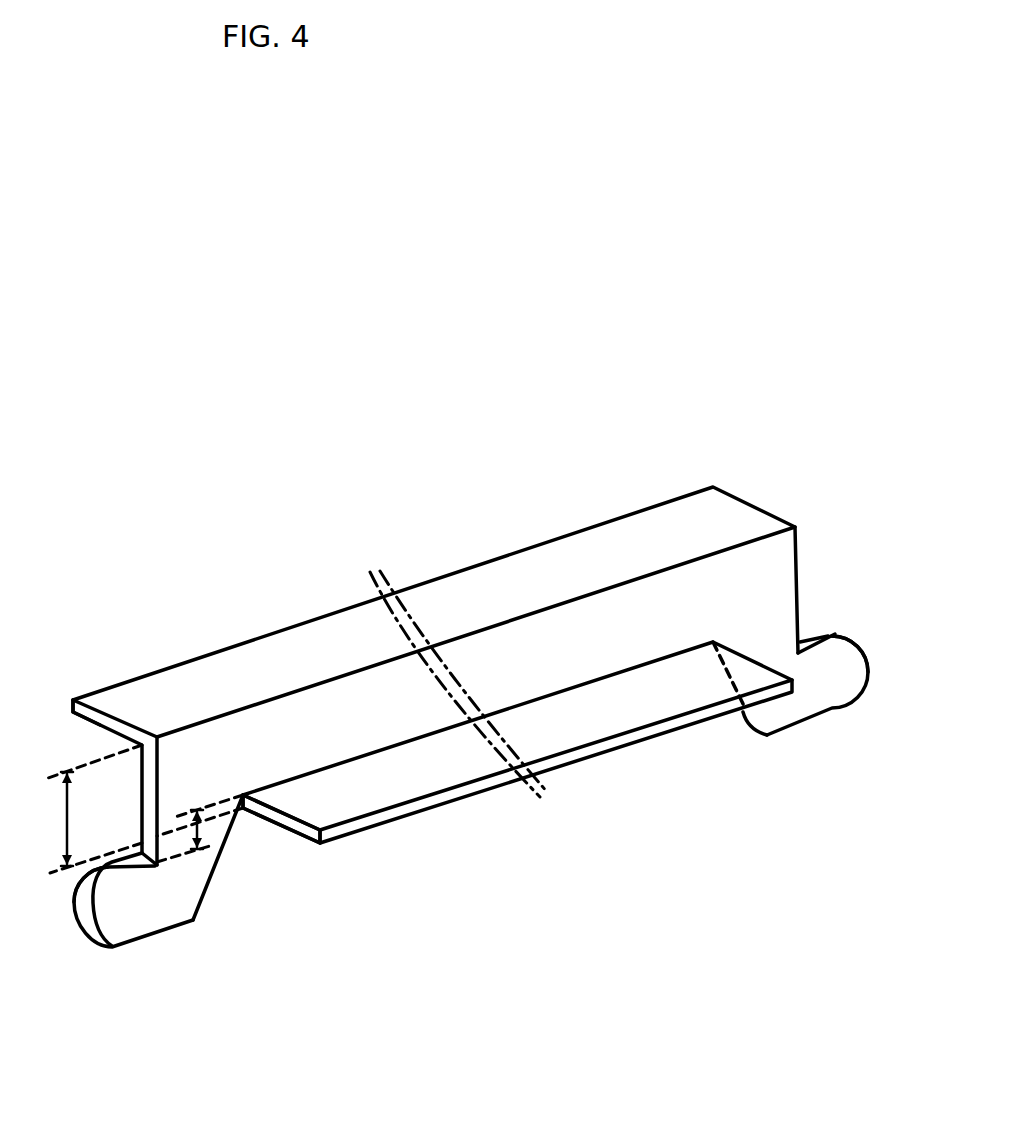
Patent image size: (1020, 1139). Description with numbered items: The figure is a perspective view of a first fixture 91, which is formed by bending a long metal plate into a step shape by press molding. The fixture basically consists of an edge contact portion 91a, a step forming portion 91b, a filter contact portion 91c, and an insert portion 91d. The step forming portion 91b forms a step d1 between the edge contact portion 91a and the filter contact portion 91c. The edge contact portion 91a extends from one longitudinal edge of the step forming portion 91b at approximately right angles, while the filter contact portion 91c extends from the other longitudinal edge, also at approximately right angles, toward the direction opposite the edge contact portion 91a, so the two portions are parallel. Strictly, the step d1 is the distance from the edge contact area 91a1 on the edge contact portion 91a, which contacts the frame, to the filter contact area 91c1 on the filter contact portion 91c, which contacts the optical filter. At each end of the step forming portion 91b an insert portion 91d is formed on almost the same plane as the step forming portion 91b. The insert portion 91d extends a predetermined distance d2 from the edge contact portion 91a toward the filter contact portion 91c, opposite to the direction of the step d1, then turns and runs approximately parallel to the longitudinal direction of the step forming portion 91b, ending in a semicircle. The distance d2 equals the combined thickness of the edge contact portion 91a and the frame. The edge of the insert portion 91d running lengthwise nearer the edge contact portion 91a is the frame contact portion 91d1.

The first fixture 91 is at (469, 673).
The edge contact portion 91a is at (577, 710).
The edge contact area 91a1 is at (290, 833).
The step forming portion 91b is at (757, 567).
The filter contact portion 91c is at (508, 563).
The filter contact area 91c1 is at (82, 733).
The insert portion 91d is at (850, 672).
The frame contact portion 91d1 is at (823, 635).
The step d1 is at (85, 809).
The predetermined distance d2 is at (208, 832).